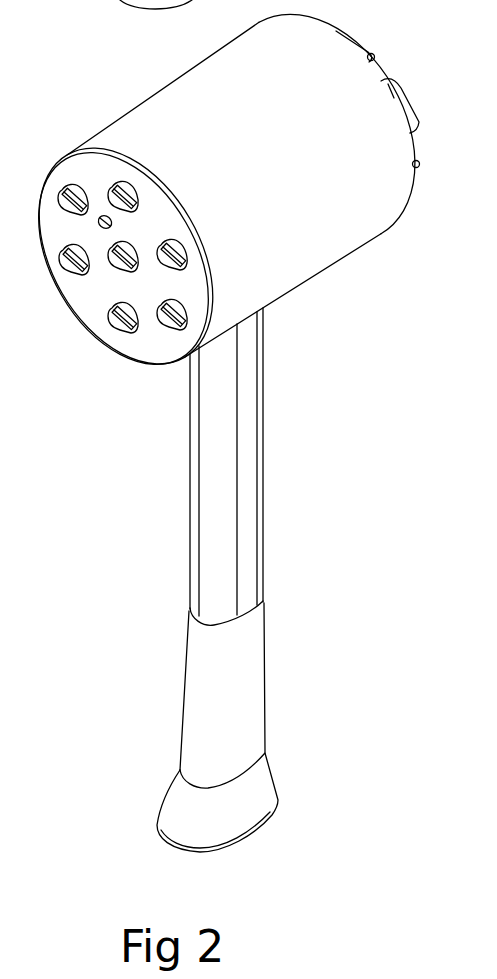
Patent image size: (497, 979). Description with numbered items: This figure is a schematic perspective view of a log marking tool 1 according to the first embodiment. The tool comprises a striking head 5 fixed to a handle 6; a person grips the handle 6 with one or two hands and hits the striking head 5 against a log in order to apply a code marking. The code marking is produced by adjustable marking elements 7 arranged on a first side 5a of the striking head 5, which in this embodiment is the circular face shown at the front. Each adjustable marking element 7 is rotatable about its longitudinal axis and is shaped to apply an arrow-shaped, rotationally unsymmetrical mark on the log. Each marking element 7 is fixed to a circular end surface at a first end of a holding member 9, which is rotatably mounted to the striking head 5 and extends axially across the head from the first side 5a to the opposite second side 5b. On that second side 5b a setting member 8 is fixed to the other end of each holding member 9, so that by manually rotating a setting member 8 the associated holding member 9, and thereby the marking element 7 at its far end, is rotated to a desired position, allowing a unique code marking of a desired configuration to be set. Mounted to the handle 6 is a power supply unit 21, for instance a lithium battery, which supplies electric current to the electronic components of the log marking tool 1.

The log marking tool 1 is at (237, 428).
The striking head 5 is at (209, 204).
The first side of the striking head 5a is at (62, 172).
The second side of the striking head 5b is at (416, 146).
The handle 6 is at (250, 465).
The adjustable marking element 7 is at (85, 272).
The setting member 8 is at (363, 52).
The holding member 9 is at (69, 274).
The power supply unit 21 is at (262, 793).